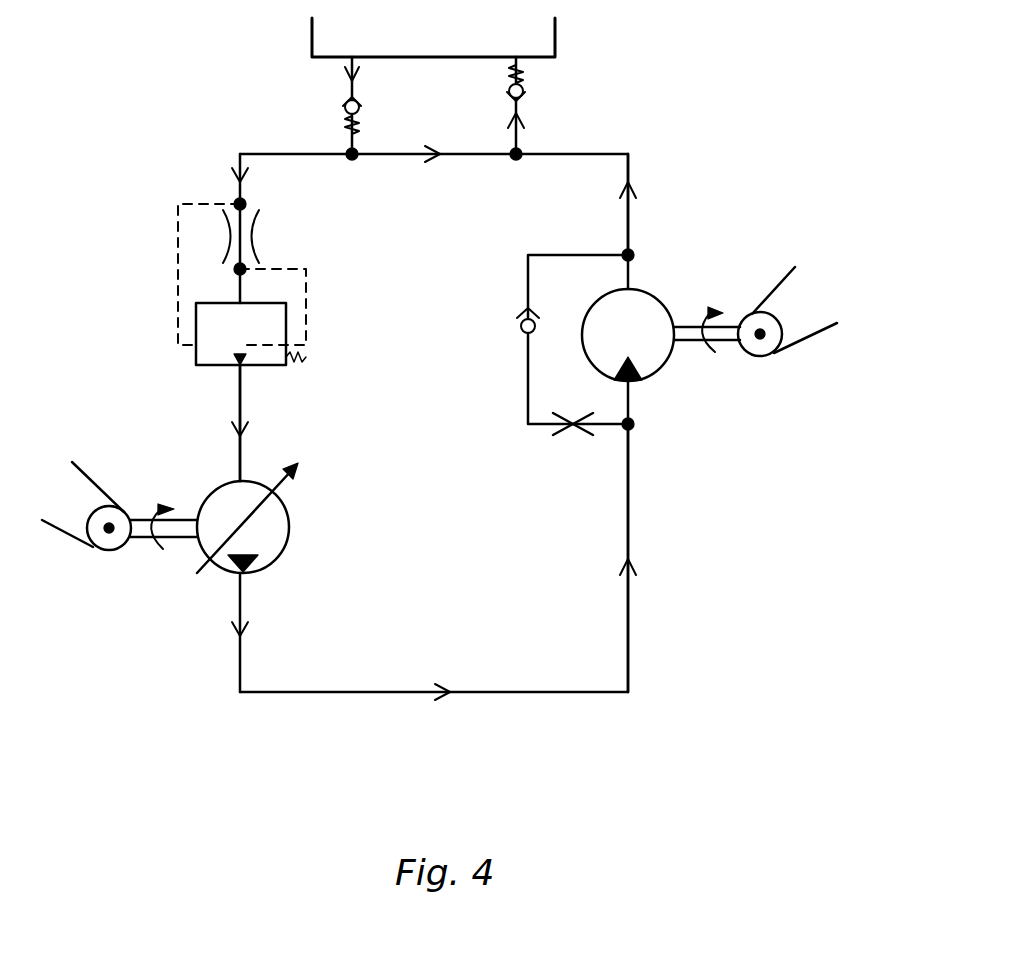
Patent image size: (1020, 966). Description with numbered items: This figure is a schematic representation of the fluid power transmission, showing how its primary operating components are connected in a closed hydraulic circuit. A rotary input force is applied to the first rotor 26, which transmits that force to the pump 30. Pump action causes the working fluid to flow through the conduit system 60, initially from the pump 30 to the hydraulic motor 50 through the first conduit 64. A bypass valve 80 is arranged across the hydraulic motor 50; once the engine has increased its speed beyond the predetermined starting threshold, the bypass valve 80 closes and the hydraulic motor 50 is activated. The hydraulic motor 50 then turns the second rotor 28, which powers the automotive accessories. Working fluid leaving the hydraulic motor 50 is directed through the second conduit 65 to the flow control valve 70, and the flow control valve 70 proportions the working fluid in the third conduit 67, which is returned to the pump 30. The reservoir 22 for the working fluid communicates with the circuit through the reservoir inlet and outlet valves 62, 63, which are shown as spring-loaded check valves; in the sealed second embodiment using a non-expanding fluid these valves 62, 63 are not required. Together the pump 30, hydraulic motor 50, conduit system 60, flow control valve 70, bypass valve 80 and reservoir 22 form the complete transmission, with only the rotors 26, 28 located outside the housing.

The reservoir 22 is at (556, 45).
The reservoir inlet valve 62 is at (523, 89).
The reservoir outlet valve 63 is at (344, 108).
The second conduit system 65 is at (628, 170).
The flow control valve 70 is at (196, 315).
The third conduit 67 is at (240, 467).
The pump 30 is at (220, 572).
The first rotor 26 is at (125, 511).
The bypass valve 80 is at (520, 326).
The hydraulic motor 50 is at (670, 303).
The second rotor 28 is at (780, 283).
The first conduit 64 is at (629, 628).
The conduit system 60 is at (494, 702).